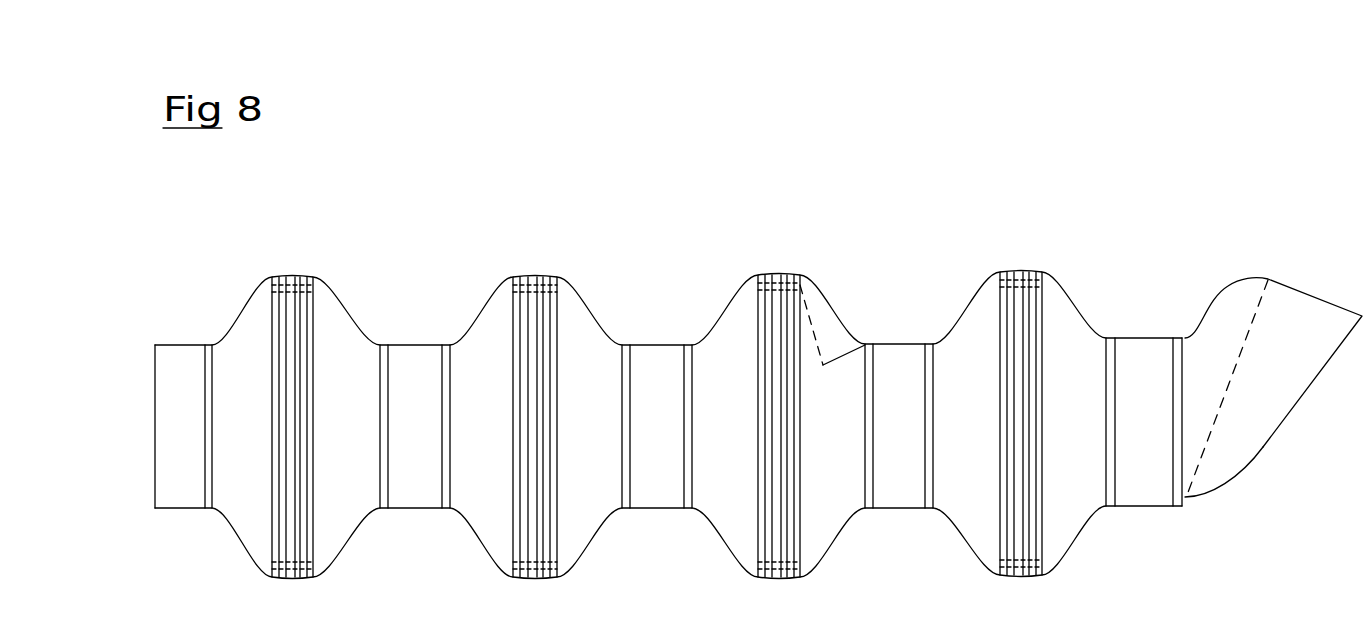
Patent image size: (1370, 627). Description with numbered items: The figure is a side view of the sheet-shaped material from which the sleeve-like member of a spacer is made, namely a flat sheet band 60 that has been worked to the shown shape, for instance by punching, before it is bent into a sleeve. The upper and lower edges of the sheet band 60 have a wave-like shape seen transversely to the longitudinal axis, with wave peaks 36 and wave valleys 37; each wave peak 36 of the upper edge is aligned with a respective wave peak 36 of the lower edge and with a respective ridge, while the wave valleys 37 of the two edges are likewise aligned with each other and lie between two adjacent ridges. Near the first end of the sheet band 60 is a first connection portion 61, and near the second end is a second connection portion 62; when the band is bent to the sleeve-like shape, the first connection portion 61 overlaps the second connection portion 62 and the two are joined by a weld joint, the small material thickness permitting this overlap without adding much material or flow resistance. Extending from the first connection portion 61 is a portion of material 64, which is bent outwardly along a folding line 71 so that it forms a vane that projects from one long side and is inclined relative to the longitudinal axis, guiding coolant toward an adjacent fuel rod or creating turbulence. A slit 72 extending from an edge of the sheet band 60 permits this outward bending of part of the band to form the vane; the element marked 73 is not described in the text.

The wave peak 36 is at (294, 275).
The wave valley 37 is at (381, 344).
The sheet band 60 is at (478, 224).
The first connection portion 61 is at (1155, 364).
The second connection portion 62 is at (180, 372).
The portion of material 64 is at (1255, 435).
The folding line 71 is at (1257, 308).
The slit 72 is at (849, 348).
The tab 73 is at (808, 322).